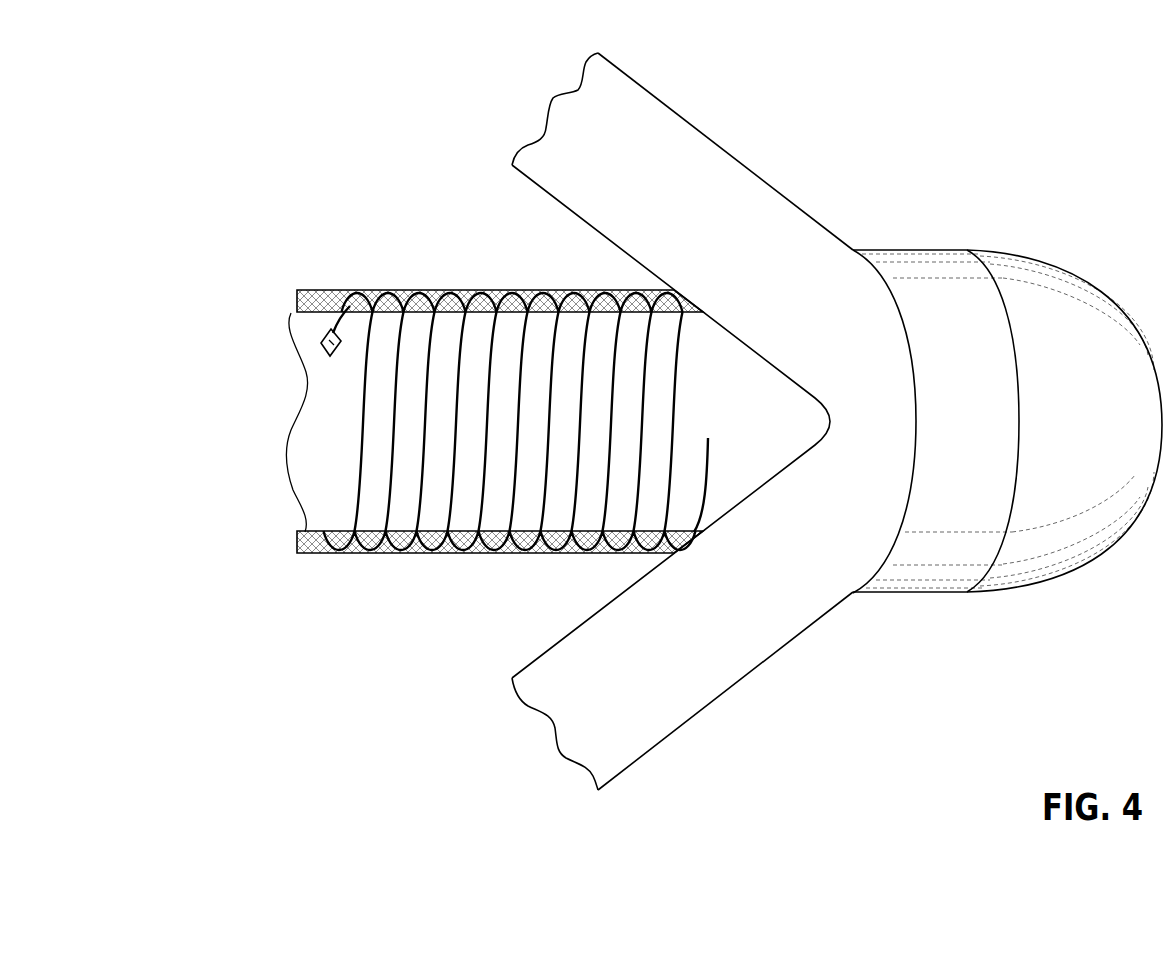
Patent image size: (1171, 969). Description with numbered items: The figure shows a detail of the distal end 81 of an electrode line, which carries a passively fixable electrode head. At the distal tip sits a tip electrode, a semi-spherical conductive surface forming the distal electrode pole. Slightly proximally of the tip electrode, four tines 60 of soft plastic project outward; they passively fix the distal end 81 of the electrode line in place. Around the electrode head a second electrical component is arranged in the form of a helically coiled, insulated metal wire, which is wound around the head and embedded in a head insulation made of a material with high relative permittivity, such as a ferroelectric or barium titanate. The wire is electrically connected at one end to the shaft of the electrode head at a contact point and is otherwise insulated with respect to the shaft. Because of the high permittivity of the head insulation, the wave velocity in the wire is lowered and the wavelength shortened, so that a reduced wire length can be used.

The tines 60 is at (730, 180).
The distal end 81 is at (313, 733).